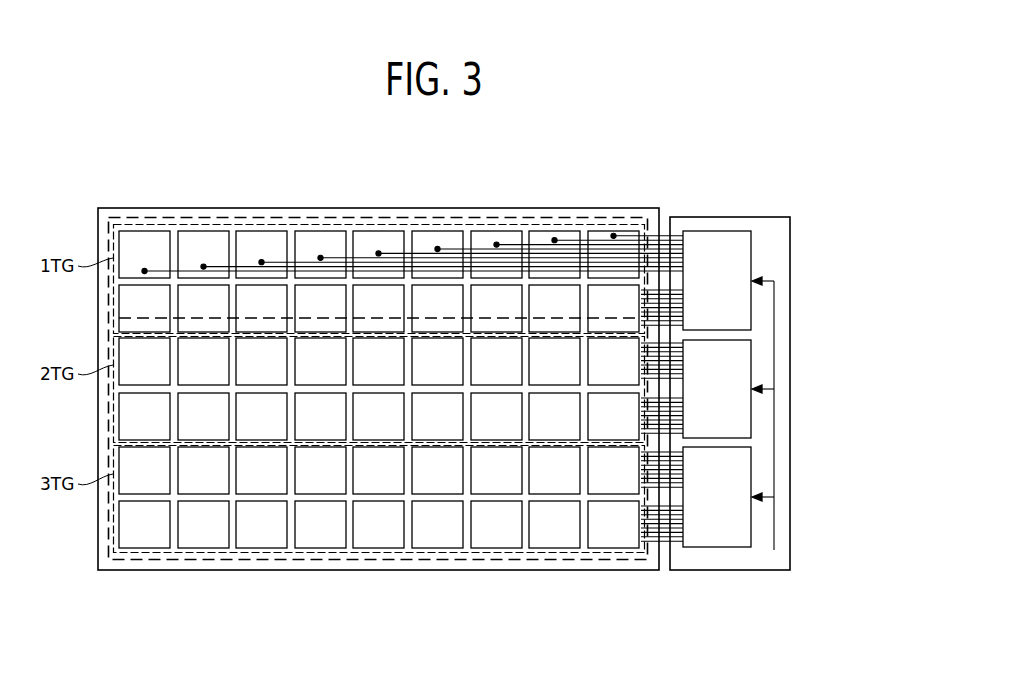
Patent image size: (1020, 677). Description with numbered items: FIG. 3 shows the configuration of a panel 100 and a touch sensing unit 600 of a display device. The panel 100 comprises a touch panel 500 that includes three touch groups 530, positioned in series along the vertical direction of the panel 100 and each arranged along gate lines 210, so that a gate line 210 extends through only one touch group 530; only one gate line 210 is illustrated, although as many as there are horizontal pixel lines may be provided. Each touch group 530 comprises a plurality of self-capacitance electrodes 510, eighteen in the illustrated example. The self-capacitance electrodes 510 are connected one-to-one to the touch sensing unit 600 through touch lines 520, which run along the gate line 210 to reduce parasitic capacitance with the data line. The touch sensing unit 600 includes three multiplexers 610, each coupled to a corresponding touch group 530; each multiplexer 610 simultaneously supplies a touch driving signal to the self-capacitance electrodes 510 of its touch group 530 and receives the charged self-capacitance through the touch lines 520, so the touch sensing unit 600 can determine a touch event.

The panel 100 is at (497, 208).
The gate line 210 is at (141, 318).
The touch panel 500 is at (209, 217).
The self-capacitance electrode 510 is at (148, 246).
The touch line 520 is at (270, 262).
The touch group 530 is at (330, 224).
The touch sensing unit 600 is at (734, 362).
The multiplexer 610 is at (738, 231).